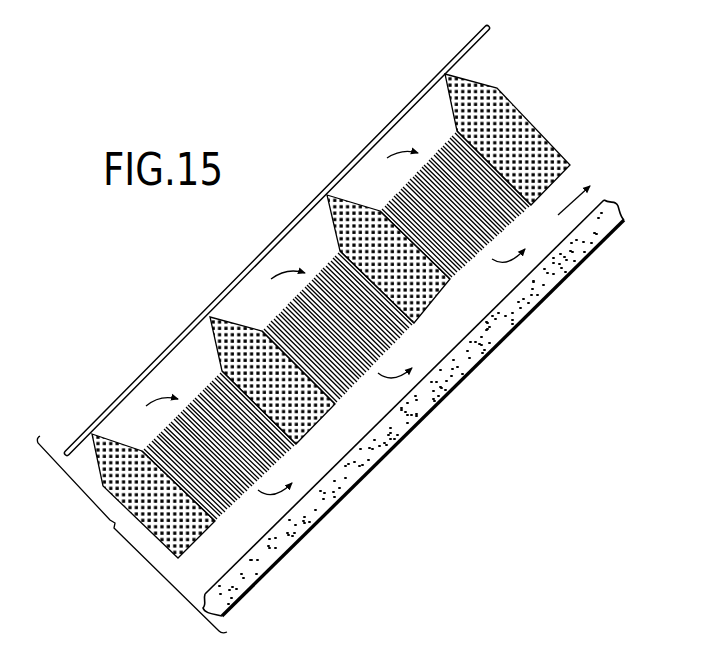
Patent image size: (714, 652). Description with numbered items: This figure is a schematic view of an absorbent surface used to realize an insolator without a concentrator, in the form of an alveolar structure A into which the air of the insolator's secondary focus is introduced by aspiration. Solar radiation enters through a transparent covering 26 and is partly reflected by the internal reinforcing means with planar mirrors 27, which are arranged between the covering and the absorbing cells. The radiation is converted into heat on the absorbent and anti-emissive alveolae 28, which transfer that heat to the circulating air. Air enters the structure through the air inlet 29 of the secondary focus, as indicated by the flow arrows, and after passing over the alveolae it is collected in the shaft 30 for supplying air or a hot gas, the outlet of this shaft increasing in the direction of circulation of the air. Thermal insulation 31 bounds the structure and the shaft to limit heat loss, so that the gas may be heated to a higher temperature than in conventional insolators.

The transparent covering 26 is at (380, 127).
The internal reinforcing means with planar mirrors 27 is at (263, 331).
The absorbent and anti-emissive alveolae 28 is at (334, 396).
The air inlet of the secondary focus 29 is at (225, 329).
The shaft for supplying air or a hot gas 30 is at (474, 316).
The thermal insulation 31 is at (188, 532).
The alveolar structure A is at (132, 534).